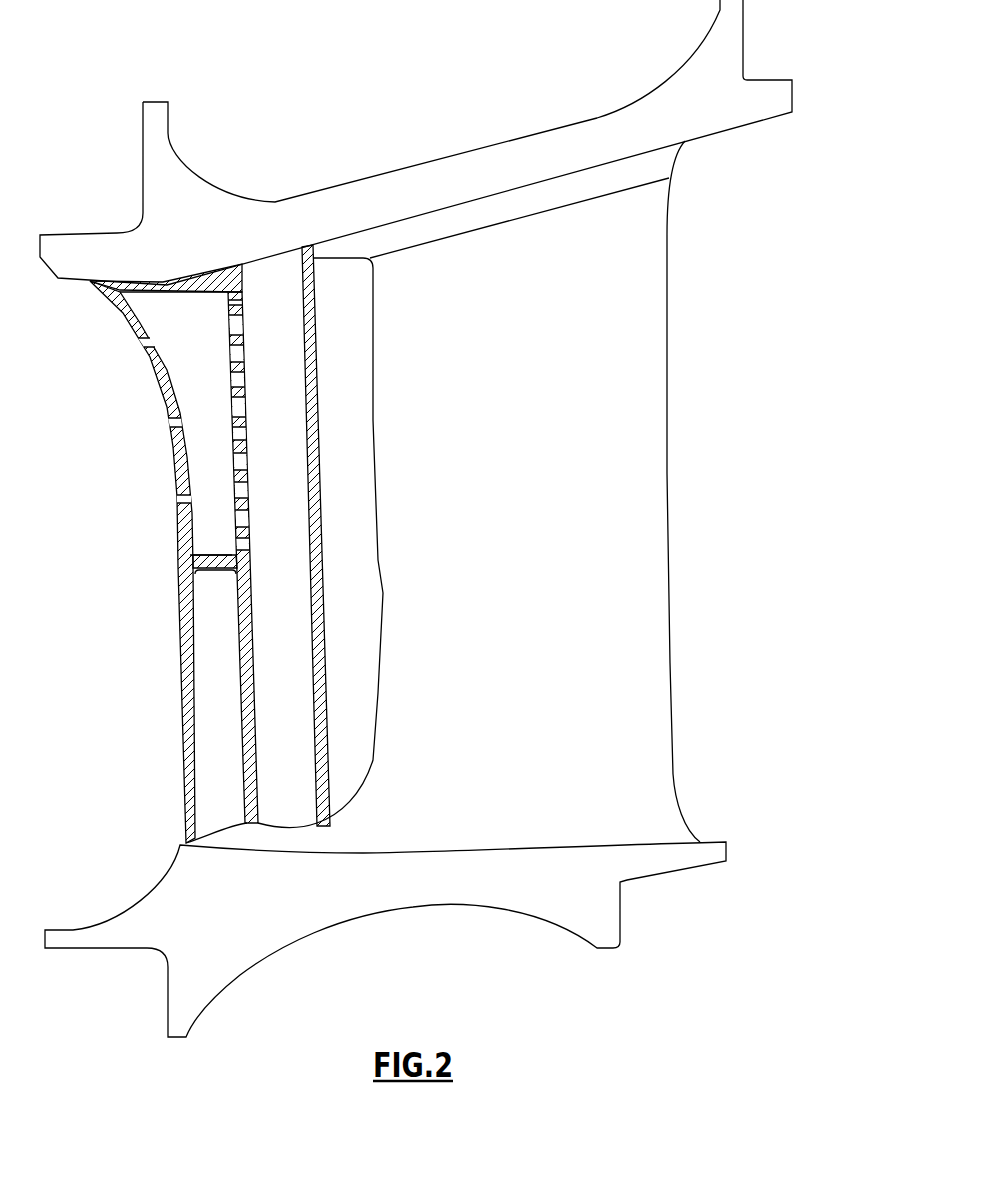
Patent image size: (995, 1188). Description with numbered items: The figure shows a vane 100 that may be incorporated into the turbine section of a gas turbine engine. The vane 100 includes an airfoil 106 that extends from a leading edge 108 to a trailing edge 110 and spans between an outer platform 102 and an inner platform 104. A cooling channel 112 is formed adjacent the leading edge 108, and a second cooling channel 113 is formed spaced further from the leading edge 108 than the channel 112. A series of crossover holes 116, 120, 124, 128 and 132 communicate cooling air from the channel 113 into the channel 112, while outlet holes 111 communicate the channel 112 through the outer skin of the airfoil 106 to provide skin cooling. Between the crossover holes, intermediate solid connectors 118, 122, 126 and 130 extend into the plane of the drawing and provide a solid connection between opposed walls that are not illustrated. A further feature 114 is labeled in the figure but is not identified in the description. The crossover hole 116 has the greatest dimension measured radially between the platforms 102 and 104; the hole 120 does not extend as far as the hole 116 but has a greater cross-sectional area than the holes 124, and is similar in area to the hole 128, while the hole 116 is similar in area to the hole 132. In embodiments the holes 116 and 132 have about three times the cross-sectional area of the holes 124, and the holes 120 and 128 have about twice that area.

The vane 100 is at (758, 281).
The platform 102 is at (426, 177).
The platform 104 is at (537, 887).
The airfoil 106 is at (653, 476).
The leading edge 108 is at (167, 455).
The trailing edge 110 is at (667, 233).
The outlet holes 111 is at (137, 340).
The cooling channel 112 is at (187, 350).
The second cooling channel 113 is at (298, 605).
The second cavity 114 is at (213, 642).
The crossover hole 116 is at (240, 299).
The intermediate solid connector 118 is at (240, 300).
The crossover hole 120 is at (240, 328).
The intermediate solid connector 122 is at (238, 340).
The crossover holes 124 is at (238, 354).
The intermediate solid connector 126 is at (241, 462).
The crossover hole 128 is at (241, 490).
The intermediate solid connector 130 is at (241, 503).
The crossover hole 132 is at (241, 520).